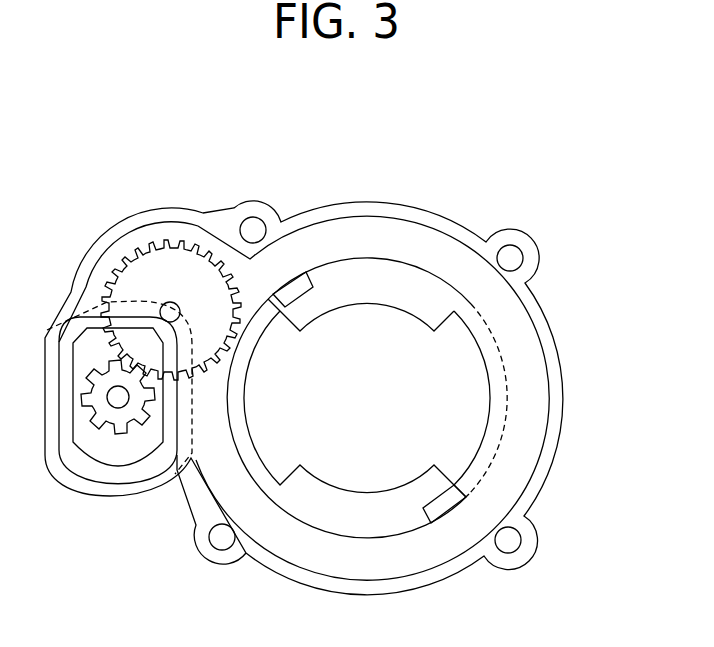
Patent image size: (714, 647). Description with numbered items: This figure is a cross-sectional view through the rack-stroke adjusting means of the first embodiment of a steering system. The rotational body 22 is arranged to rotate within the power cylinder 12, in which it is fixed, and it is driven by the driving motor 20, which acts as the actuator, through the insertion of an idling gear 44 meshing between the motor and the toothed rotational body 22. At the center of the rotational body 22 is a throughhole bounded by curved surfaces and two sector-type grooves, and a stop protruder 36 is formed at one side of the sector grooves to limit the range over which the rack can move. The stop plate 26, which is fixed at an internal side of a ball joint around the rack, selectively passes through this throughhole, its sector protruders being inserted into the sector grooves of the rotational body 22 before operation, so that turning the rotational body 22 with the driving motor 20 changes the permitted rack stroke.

The power cylinder 12 is at (413, 205).
The driving motor 20 is at (113, 455).
The rotational body 22 is at (446, 265).
The stop plate 26 is at (445, 421).
The stop protruder 36 is at (305, 273).
The idling gear 44 is at (147, 265).